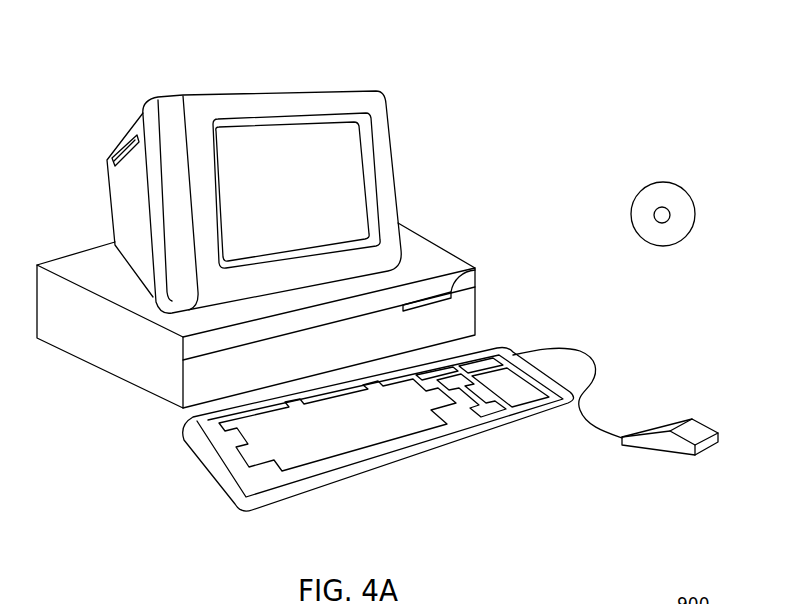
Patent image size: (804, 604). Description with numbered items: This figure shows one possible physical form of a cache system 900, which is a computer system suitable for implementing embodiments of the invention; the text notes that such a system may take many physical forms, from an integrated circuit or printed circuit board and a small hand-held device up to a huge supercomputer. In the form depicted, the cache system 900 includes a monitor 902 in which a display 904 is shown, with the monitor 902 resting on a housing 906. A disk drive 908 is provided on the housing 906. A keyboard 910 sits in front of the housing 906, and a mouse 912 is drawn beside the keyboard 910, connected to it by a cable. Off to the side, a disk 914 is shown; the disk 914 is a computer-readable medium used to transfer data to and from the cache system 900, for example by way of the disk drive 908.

The cache system 900 is at (587, 68).
The monitor 902 is at (397, 198).
The display 904 is at (358, 147).
The housing 906 is at (148, 393).
The disk drive 908 is at (475, 268).
The keyboard 910 is at (390, 465).
The mouse 912 is at (706, 419).
The disk 914 is at (678, 183).